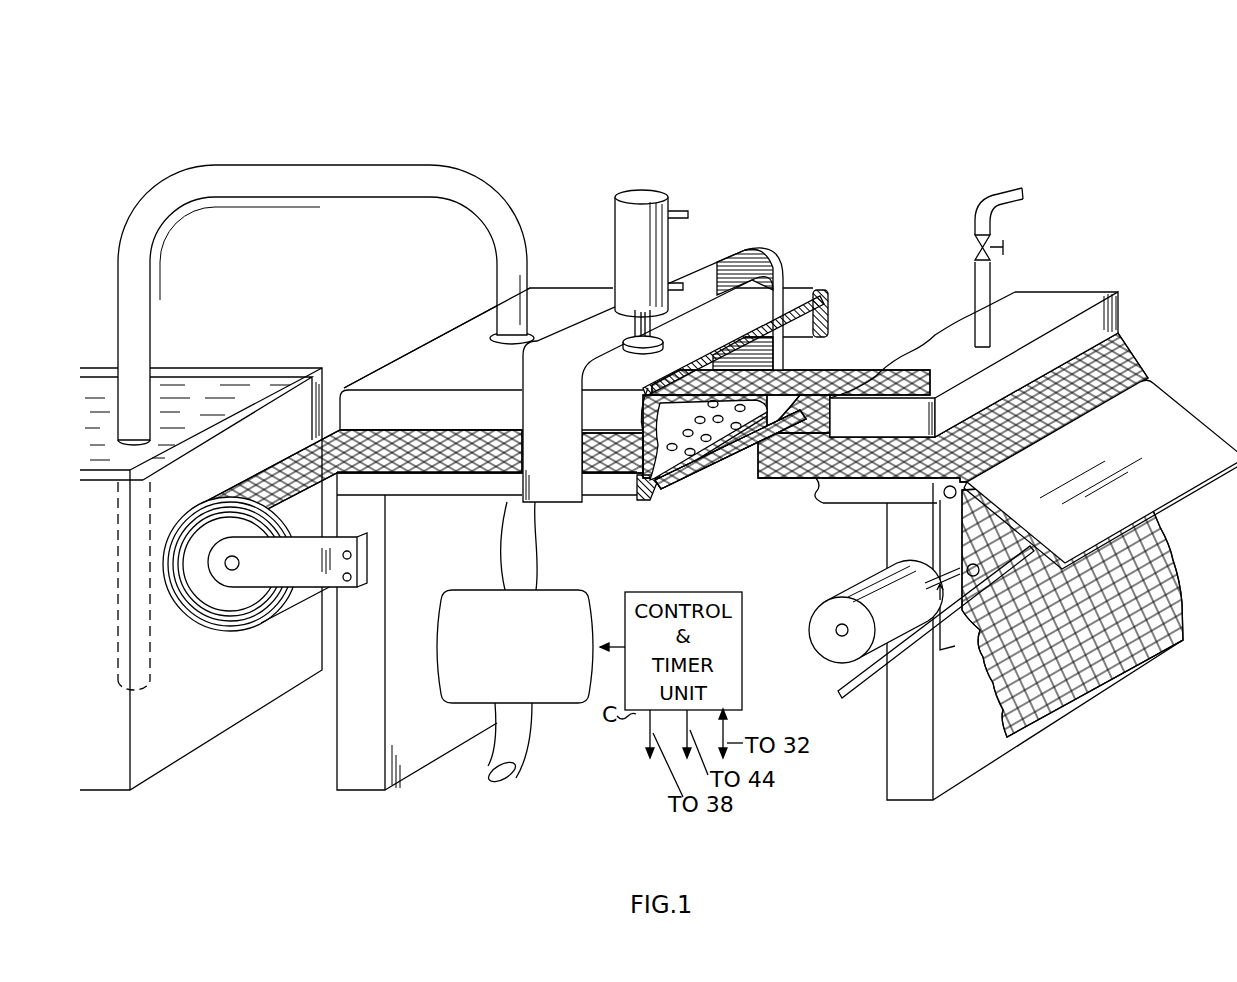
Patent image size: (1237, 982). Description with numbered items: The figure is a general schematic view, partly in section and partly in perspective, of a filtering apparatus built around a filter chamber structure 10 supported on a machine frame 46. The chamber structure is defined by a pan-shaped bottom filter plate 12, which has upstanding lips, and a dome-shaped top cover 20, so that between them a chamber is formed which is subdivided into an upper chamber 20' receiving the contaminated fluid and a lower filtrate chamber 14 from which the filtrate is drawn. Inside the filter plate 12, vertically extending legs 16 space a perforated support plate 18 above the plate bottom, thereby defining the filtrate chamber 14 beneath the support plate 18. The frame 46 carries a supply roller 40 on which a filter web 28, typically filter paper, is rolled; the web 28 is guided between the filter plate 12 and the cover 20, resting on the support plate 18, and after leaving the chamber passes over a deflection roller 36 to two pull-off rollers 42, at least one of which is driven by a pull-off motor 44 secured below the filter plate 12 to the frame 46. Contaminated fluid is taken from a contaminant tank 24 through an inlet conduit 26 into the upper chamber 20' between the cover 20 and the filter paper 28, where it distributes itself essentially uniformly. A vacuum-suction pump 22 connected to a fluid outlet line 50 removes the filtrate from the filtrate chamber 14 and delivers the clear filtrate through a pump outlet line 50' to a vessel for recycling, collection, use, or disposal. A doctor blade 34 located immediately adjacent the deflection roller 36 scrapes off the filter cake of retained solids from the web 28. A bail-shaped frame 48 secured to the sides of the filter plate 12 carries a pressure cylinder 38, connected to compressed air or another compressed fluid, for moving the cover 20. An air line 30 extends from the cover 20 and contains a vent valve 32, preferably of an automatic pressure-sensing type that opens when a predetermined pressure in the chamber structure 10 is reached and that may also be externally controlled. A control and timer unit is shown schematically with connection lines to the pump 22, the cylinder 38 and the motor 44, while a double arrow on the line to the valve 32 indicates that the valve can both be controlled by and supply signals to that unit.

The filter chamber structure 10 is at (448, 338).
The filter plate 12 is at (668, 485).
The filtrate chamber 14 is at (738, 430).
The legs 16 is at (753, 427).
The perforated support plate 18 is at (723, 425).
The top cover 20 is at (729, 322).
The upper chamber 20' is at (766, 343).
The vacuum-suction pump 22 is at (558, 688).
The contaminant tank 24 is at (207, 728).
The inlet conduit 26 is at (265, 183).
The filter web 28 is at (1147, 652).
The air line 30 is at (982, 212).
The vent valve 32 is at (977, 252).
The doctor blade 34 is at (1155, 405).
The deflection roller 36 is at (948, 498).
The pressure cylinder 38 is at (660, 248).
The supply roller 40 is at (247, 633).
The pull-off rollers 42 is at (845, 690).
The pull-off motor 44 is at (817, 637).
The machine frame 46 is at (368, 722).
The bail-shaped frame 48 is at (720, 260).
The fluid outlet line 50 is at (540, 546).
The pump outlet line 50' is at (537, 751).